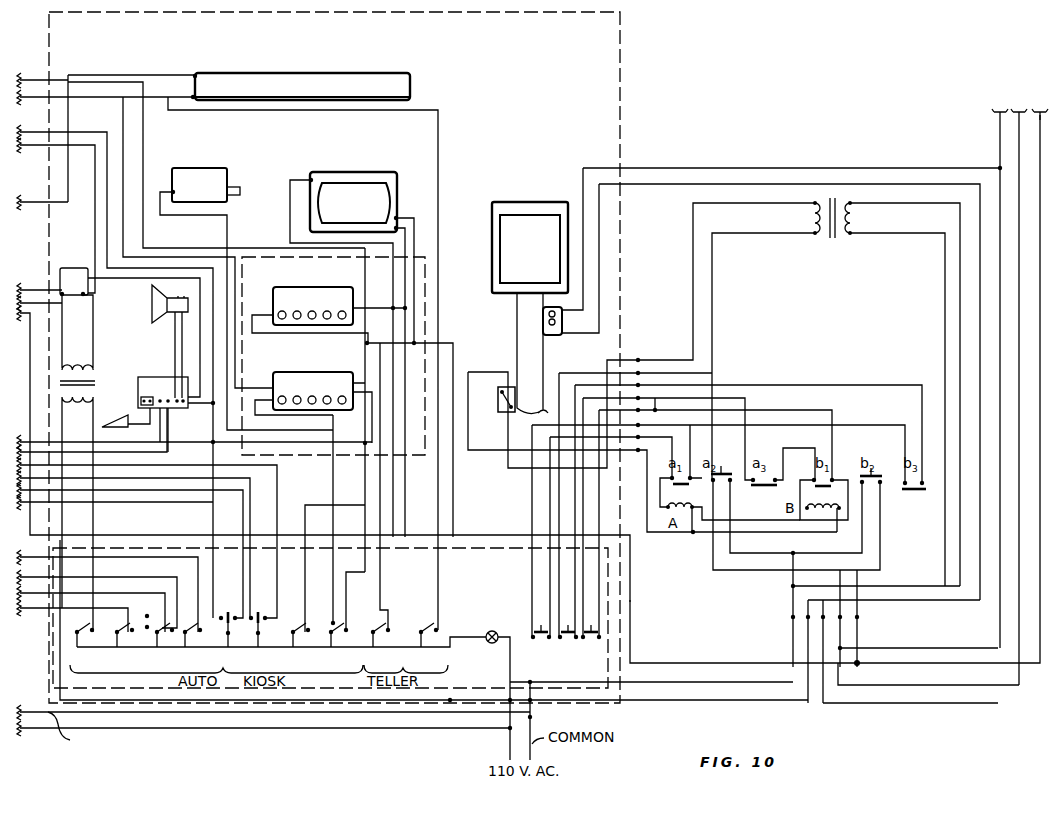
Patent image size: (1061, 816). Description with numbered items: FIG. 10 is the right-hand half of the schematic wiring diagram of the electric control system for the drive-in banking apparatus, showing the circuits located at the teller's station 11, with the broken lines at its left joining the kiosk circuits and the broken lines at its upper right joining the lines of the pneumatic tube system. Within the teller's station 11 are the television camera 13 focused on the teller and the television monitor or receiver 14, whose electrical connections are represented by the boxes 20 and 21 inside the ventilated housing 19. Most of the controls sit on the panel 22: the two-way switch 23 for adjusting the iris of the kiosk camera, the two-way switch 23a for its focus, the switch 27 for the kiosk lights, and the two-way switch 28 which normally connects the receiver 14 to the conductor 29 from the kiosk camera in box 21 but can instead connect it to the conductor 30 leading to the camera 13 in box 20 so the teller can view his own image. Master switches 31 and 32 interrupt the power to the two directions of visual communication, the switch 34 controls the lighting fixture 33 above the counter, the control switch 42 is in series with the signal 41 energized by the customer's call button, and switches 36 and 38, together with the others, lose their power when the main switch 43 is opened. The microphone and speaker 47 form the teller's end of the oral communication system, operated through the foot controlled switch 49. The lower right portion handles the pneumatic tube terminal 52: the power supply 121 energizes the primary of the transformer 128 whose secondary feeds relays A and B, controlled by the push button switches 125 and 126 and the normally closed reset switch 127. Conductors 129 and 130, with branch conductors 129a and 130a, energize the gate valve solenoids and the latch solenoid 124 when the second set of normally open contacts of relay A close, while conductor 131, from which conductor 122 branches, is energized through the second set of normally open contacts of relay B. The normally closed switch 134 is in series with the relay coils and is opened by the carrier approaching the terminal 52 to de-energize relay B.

The assembly defining a teller's station 11 is at (622, 55).
The television camera 13 is at (227, 170).
The television monitor or receiver 14 is at (318, 172).
The ventilated housing 19 is at (427, 280).
The box containing camera connections 20 is at (302, 367).
The box containing camera connections 21 is at (302, 282).
The panel 22 is at (470, 548).
The two-way switch 23 is at (228, 638).
The two-way switch 23a is at (260, 638).
The switch 27 is at (122, 644).
The two-way switch 28 is at (336, 644).
The conductor 29 is at (364, 488).
The conductor 30 is at (332, 488).
The master switch 31 is at (379, 644).
The master switch 32 is at (298, 644).
The lighting fixture 33 is at (410, 82).
The switch 34 is at (426, 644).
The switch 36 is at (190, 644).
The switch 38 is at (159, 639).
The signal 41 is at (70, 268).
The control switch 42 is at (82, 644).
The master or main switch 43 is at (494, 645).
The microphone and speaker 47 is at (150, 300).
The foot controlled switch 49 is at (120, 420).
The terminal 52 is at (520, 202).
The power supply 121 is at (77, 732).
The conductor 122 is at (622, 612).
The solenoid 124 is at (555, 335).
The push button switch 125 is at (570, 648).
The push button switch 126 is at (598, 650).
The reset push button switch 127 is at (545, 650).
The transformer 128 is at (839, 245).
The conductor 129 is at (1000, 122).
The branch conductor 129a is at (788, 170).
The conductor 130 is at (1019, 132).
The branch conductor 130a is at (788, 186).
The conductor 131 is at (1040, 148).
The normally closed switch 134 is at (505, 412).